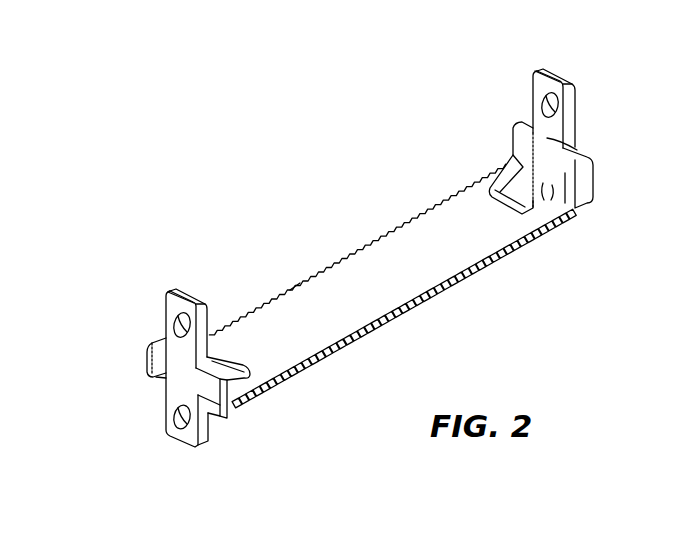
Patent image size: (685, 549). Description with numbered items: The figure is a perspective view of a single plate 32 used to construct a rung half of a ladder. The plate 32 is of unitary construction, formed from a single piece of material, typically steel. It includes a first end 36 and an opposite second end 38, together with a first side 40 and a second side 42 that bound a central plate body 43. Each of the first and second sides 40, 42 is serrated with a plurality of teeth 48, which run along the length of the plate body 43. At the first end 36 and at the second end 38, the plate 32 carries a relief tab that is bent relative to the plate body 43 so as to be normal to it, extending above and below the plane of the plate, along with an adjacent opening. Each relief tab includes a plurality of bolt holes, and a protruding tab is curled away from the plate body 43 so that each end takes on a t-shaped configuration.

The plate 32 is at (362, 150).
The first end 36 is at (152, 326).
The second end 38 is at (585, 120).
The first side 40 is at (259, 290).
The second side 42 is at (436, 310).
The plate body 43 is at (394, 290).
The teeth 48 is at (291, 291).